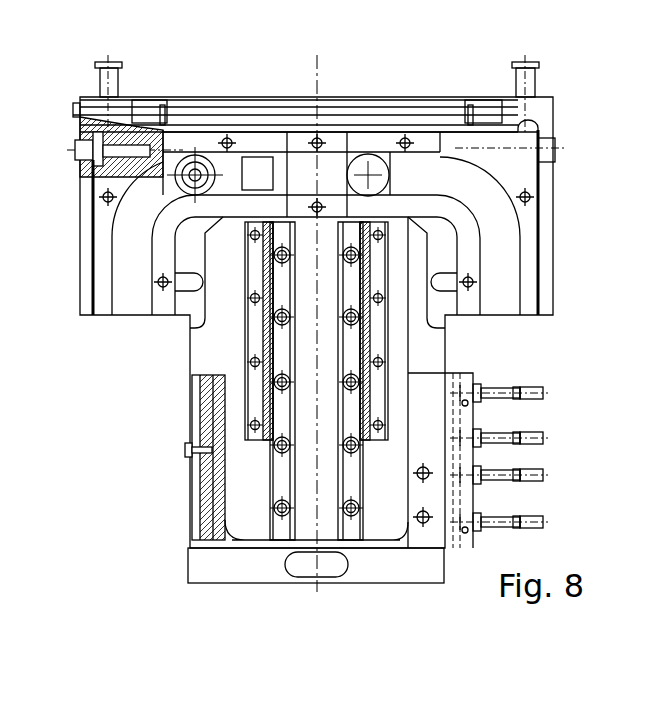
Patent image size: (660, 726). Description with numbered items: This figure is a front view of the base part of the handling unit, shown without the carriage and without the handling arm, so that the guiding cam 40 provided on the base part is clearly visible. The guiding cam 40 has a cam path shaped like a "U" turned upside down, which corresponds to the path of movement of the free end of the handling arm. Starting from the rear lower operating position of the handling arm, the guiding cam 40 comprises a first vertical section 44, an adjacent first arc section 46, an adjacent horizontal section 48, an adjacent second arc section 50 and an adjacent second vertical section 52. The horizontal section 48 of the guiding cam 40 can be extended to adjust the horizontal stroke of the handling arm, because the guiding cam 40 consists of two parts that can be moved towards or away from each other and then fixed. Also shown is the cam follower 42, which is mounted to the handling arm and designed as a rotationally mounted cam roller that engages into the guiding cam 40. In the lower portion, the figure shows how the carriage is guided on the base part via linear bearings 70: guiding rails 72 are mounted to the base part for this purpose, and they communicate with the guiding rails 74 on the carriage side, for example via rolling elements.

The guiding cam 40 is at (508, 233).
The cam follower 42 is at (207, 168).
The first vertical section 44 is at (515, 272).
The first arc section 46 is at (493, 185).
The horizontal section 48 is at (410, 173).
The second arc section 50 is at (137, 186).
The second vertical section 52 is at (120, 268).
The linear bearings 70 is at (358, 347).
The guiding rails 72 is at (352, 480).
The guiding rails 74 is at (377, 400).